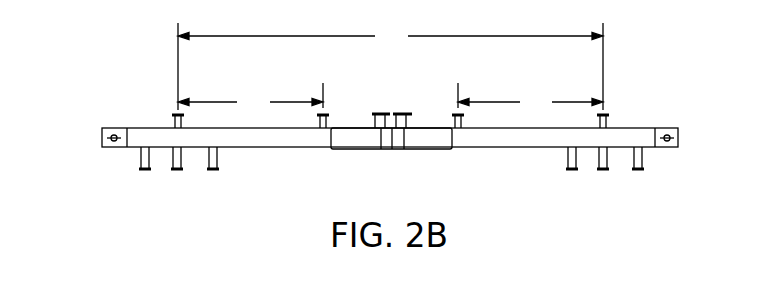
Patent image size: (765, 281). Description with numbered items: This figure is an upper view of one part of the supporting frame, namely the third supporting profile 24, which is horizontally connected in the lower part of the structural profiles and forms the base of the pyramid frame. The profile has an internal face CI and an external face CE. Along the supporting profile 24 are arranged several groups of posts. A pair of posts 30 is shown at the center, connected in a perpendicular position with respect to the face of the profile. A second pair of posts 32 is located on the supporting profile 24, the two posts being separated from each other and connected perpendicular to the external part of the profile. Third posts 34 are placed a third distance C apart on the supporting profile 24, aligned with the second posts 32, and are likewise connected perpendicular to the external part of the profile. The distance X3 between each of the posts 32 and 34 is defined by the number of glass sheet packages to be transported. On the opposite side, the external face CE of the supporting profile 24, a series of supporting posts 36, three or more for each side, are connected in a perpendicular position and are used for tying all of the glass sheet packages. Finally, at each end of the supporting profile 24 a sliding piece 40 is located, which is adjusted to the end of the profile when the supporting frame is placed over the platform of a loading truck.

The supporting profile 24 is at (522, 146).
The first pair of posts 30 is at (384, 100).
The second pair of posts 32 is at (305, 123).
The third posts 34 is at (166, 104).
The supporting posts 36 is at (202, 183).
The sliding piece 40 is at (103, 124).
The external face CE is at (283, 144).
The internal face CI is at (643, 118).
The third distance C is at (390, 65).
The distance between posts X3 is at (390, 100).